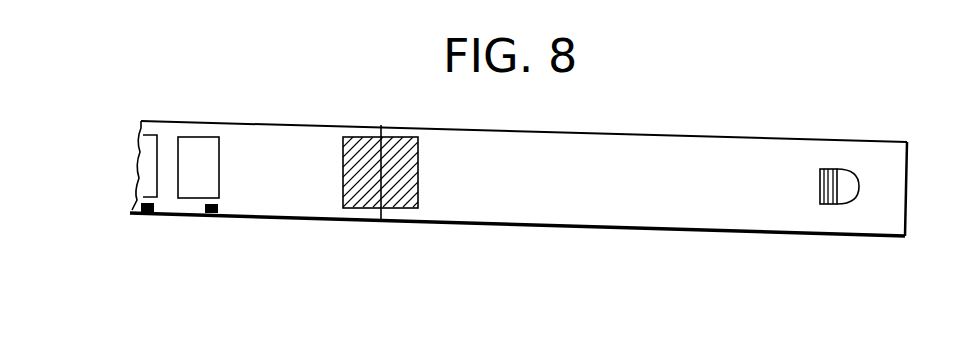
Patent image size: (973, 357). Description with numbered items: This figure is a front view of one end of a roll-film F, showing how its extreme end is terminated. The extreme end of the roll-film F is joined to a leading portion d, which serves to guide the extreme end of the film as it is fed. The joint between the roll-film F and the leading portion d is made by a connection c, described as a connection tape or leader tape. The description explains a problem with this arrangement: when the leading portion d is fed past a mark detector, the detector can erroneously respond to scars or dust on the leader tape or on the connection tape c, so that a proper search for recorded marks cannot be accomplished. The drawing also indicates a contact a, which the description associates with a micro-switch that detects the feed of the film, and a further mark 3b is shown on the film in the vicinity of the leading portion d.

The roll-film F is at (278, 205).
The leading portion d is at (618, 210).
The contact a is at (188, 189).
The magnetic recording mark 3b is at (210, 216).
The connection c is at (360, 195).